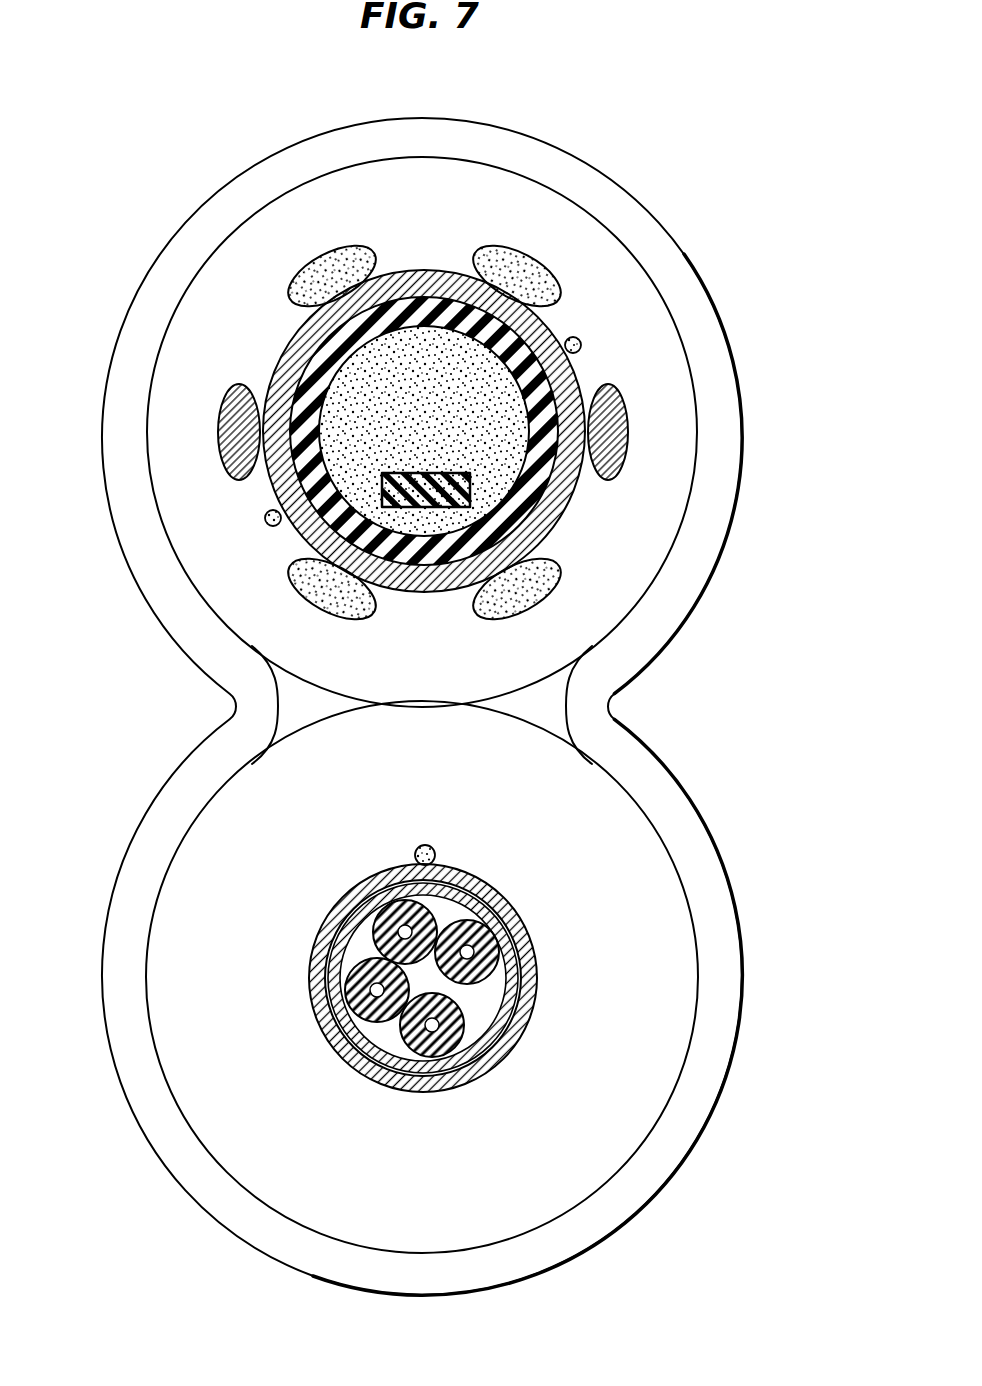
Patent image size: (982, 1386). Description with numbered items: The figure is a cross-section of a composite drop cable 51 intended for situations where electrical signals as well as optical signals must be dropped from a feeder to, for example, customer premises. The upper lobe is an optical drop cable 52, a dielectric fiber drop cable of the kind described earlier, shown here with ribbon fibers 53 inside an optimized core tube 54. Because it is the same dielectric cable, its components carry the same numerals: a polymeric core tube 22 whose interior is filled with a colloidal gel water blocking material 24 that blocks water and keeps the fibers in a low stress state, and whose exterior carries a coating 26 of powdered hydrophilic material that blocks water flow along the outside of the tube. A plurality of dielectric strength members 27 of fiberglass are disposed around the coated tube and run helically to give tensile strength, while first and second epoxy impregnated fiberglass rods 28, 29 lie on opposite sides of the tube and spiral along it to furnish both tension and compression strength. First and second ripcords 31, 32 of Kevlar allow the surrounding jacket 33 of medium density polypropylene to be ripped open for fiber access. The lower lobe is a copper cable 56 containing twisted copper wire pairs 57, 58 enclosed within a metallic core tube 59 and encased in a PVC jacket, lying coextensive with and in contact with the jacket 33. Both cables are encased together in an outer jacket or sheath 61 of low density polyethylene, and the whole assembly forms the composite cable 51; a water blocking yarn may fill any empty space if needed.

The composite drop cable 51 is at (710, 217).
The jacket 33 is at (598, 174).
The optical drop cable 52 is at (190, 310).
The jacket or sheath 61 is at (124, 900).
The copper cable 56 is at (688, 975).
The core tube 22 is at (571, 371).
The optimized core tube 54 is at (281, 485).
The coating of hydrophilic material 26 is at (569, 503).
The colloidal gel water blocking material 24 is at (348, 378).
The ribbon fibers 53 is at (414, 508).
The dielectric strength members 27 is at (477, 248).
The first epoxy impregnated fiberglass rod 28 is at (220, 432).
The second epoxy impregnated fiberglass rod 29 is at (628, 424).
The first ripcord 31 is at (269, 526).
The second ripcord 32 is at (579, 341).
The metallic core tube 59 is at (534, 948).
The twisted copper wire pair 57 is at (400, 1060).
The twisted copper wire pair 58 is at (472, 899).